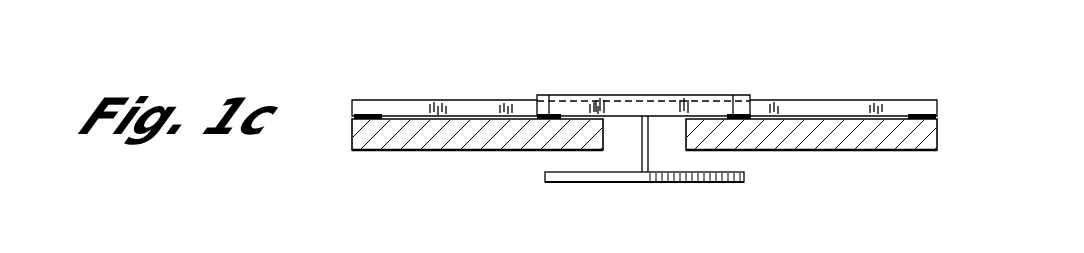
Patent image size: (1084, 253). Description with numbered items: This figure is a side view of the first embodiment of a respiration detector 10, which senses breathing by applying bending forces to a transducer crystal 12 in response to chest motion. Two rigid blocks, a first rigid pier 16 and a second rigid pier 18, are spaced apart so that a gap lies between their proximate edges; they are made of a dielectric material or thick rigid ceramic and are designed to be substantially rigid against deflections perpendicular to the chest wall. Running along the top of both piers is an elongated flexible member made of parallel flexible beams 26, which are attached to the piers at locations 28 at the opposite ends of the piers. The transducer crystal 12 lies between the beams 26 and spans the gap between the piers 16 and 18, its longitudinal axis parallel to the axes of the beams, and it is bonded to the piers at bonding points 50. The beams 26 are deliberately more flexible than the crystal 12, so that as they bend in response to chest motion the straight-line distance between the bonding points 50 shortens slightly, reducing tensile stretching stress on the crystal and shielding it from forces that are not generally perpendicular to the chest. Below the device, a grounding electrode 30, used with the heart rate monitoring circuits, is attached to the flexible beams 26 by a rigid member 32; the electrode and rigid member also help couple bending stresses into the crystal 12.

The respiration detector 10 is at (362, 79).
The transducer crystal 12 is at (608, 96).
The first rigid pier 16 is at (445, 132).
The second rigid pier 18 is at (805, 138).
The flexible beams 26 is at (463, 107).
The attachment locations 28 is at (351, 116).
The grounding electrode 30 is at (632, 175).
The rigid members 32 is at (646, 147).
The bonding points 50 is at (549, 116).